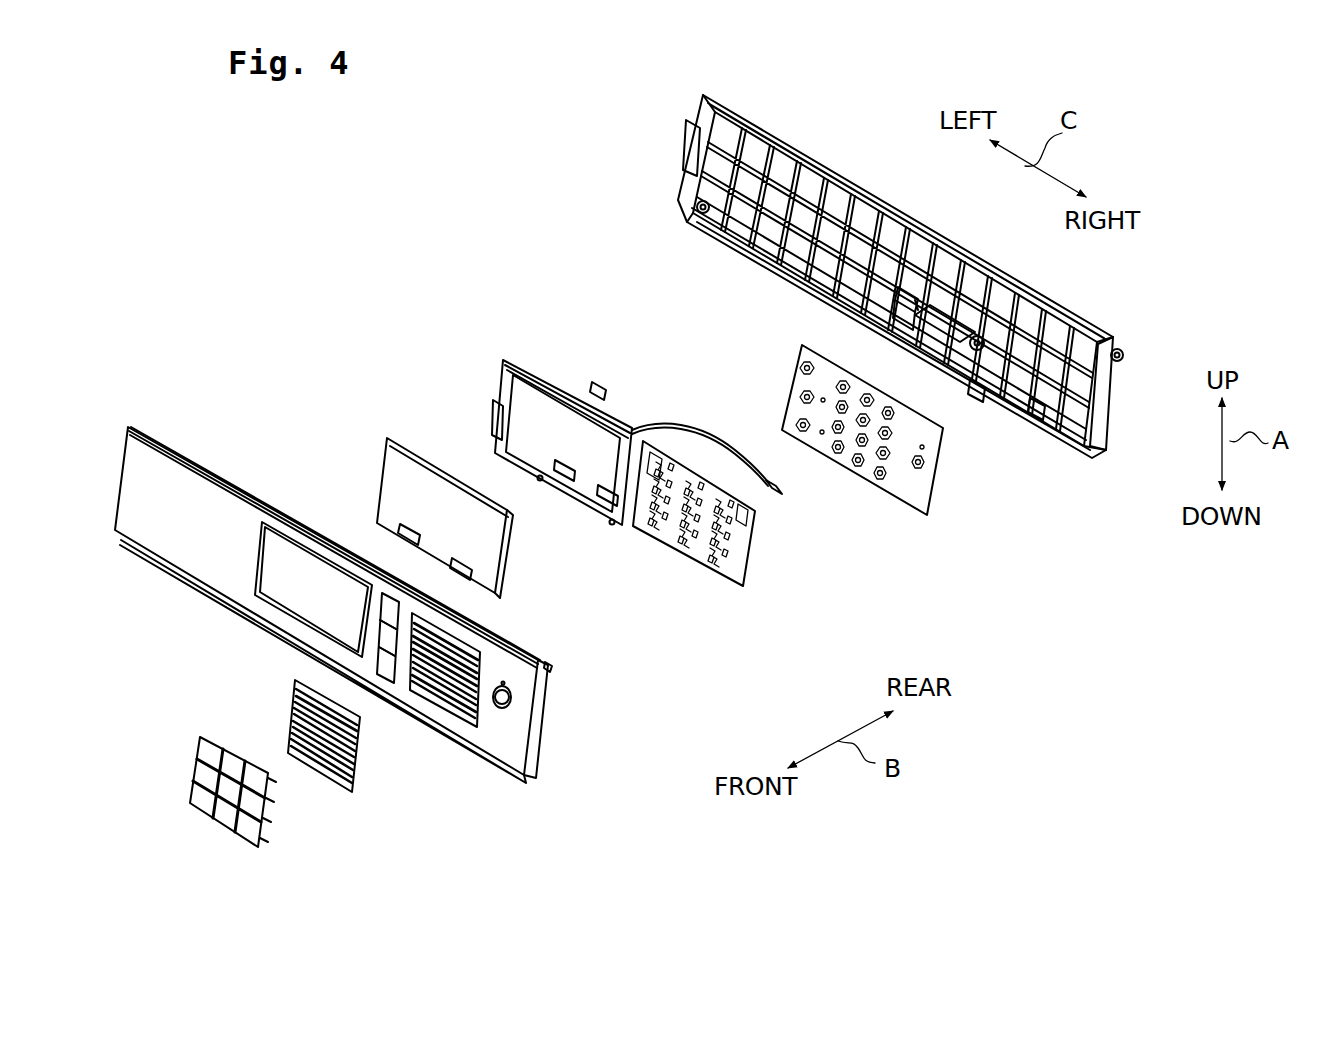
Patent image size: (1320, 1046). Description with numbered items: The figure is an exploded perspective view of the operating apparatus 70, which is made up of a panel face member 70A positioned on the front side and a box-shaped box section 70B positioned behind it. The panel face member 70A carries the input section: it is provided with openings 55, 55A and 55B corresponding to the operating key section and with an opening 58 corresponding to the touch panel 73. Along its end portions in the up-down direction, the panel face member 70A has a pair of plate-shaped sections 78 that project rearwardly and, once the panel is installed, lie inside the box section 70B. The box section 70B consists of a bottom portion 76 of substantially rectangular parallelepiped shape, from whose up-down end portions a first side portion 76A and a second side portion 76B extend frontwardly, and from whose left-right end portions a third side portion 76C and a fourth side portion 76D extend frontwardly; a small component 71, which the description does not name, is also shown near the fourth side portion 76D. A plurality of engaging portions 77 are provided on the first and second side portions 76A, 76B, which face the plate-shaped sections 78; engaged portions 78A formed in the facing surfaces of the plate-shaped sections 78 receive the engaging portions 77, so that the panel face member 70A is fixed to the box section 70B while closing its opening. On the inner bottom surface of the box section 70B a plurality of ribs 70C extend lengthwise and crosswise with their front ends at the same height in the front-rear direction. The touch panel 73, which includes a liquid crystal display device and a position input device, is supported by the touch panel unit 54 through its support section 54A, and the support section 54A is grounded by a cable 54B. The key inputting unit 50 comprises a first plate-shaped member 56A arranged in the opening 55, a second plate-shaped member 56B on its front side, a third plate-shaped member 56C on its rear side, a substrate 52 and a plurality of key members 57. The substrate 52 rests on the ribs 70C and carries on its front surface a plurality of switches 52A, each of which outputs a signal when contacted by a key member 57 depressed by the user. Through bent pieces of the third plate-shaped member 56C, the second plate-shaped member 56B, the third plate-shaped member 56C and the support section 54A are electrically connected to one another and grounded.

The key inputting unit 50 is at (208, 830).
The substrate 52 is at (953, 484).
The switches 52A is at (880, 478).
The touch panel unit 54 is at (585, 384).
The support section 54A is at (500, 410).
The cable 54B is at (710, 432).
The opening 55 is at (470, 738).
The opening 55A is at (390, 690).
The opening 55B is at (514, 700).
The first plate-shaped member 56A is at (443, 705).
The second plate-shaped member 56B is at (352, 768).
The third plate-shaped member 56C is at (750, 574).
The key members 57 is at (377, 660).
The opening 58 is at (262, 590).
The operating apparatus 70 is at (1150, 158).
The panel face member 70A is at (294, 494).
The box section 70B is at (665, 140).
The ribs 70C is at (714, 222).
The screw 71 is at (1126, 352).
The touch panel 73 is at (508, 558).
The bottom portion 76 is at (985, 260).
The first side portion 76A is at (850, 185).
The second side portion 76B is at (770, 268).
The third side portion 76C is at (682, 168).
The fourth side portion 76D is at (1108, 440).
The engaging portions 77 is at (1036, 412).
The plate-shaped sections 78 is at (208, 455).
The engaged portions 78A is at (338, 545).